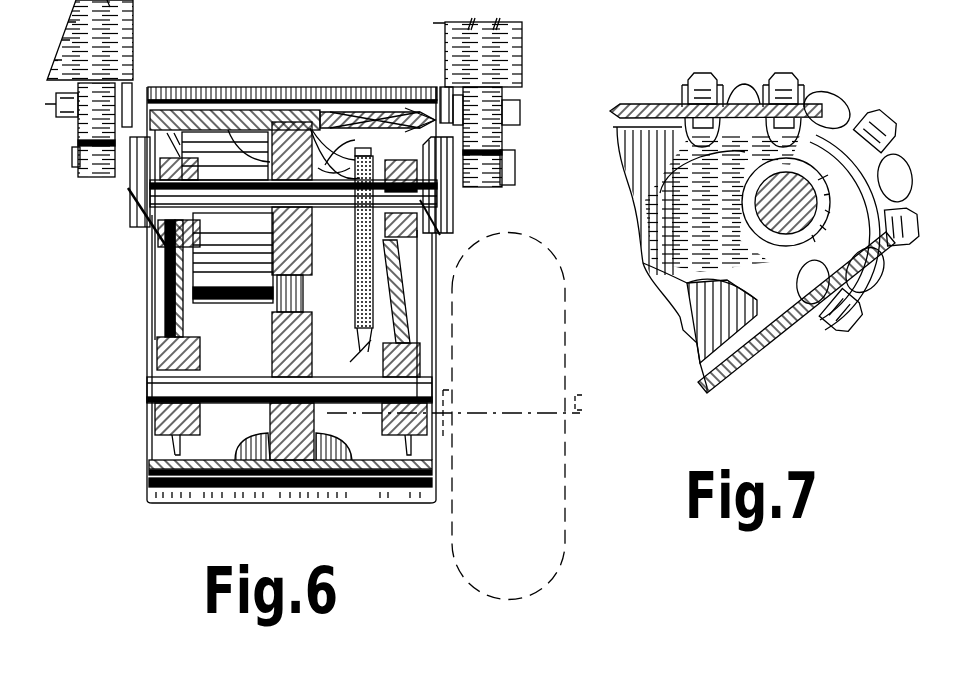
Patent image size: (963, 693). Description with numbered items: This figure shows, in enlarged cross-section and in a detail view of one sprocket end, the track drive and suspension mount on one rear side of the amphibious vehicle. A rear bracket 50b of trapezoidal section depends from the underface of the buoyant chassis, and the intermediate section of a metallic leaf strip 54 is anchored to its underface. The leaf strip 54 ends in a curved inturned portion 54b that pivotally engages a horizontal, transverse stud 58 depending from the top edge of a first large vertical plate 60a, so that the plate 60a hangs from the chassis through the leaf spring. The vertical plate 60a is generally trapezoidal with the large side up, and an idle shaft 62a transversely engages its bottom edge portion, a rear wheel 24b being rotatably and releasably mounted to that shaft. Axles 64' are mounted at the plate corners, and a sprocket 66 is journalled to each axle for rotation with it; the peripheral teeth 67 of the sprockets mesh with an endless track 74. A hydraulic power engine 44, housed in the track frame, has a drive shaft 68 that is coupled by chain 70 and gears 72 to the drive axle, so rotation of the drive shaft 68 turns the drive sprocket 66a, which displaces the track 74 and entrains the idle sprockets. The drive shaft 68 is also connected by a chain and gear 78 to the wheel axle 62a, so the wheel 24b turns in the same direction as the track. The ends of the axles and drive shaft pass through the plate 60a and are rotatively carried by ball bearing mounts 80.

In FIG. 6, the rear wheel 24b is at (447, 530).
In FIG. 6, the hydraulic power engine 44 is at (178, 327).
In FIG. 6, the rear bracket 50b is at (115, 40).
In FIG. 6, the metallic leaf strip 54 is at (137, 100).
In FIG. 6, the curved inturned portion 54b is at (462, 193).
In FIG. 6, the stud 58 is at (57, 175).
In FIG. 6, the first large vertical plate 60a is at (167, 299).
In FIG. 7, the first large vertical plate 60a is at (705, 385).
In FIG. 6, the idle shaft 62a is at (582, 395).
In FIG. 6, the axle 64' is at (261, 296).
In FIG. 7, the axle 64' is at (708, 202).
In FIG. 6, the sprocket 66 is at (283, 503).
In FIG. 6, the drive sprocket 66a is at (252, 108).
In FIG. 7, the drive sprocket 66a is at (668, 288).
In FIG. 7, the peripheral teeth 67 is at (825, 105).
In FIG. 6, the drive shaft 68 is at (352, 275).
In FIG. 6, the chain 70 is at (335, 165).
In FIG. 6, the gear 72 is at (322, 150).
In FIG. 6, the endless track 74 is at (193, 97).
In FIG. 7, the endless track 74 is at (613, 110).
In FIG. 6, the gear 78 is at (268, 318).
In FIG. 6, the ball bearing mount 80 is at (135, 192).